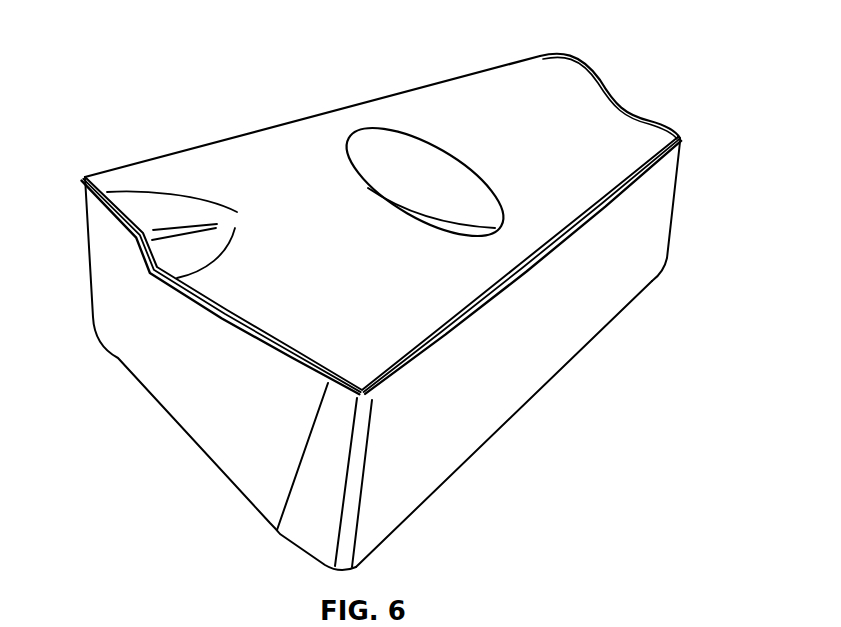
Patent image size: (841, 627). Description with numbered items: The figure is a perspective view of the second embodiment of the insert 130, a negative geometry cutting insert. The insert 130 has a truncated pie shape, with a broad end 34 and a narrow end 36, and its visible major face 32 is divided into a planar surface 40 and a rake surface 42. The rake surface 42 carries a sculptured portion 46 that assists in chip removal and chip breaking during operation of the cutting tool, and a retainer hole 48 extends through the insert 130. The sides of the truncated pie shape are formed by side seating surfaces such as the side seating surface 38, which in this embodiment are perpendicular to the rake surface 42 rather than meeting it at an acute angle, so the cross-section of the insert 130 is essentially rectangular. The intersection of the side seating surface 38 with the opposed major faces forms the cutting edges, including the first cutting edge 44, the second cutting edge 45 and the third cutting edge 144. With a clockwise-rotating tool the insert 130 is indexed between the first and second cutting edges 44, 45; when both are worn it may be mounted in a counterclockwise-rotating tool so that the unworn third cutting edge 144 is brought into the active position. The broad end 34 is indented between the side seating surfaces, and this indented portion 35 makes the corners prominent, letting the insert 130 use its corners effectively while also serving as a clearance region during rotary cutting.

The insert 130 is at (134, 56).
The major face 32 is at (403, 324).
The broad end 34 is at (135, 419).
The indented portion 35 is at (227, 443).
The narrow end 36 is at (634, 95).
The side seating surface 38 is at (622, 292).
The planar surface 40 is at (638, 146).
The rake surface 42 is at (527, 78).
The first cutting edge 44 is at (473, 458).
The second cutting edge 45 is at (247, 131).
The sculptured portion 46 is at (171, 232).
The retainer hole 48 is at (416, 214).
The third cutting edge 144 is at (497, 290).